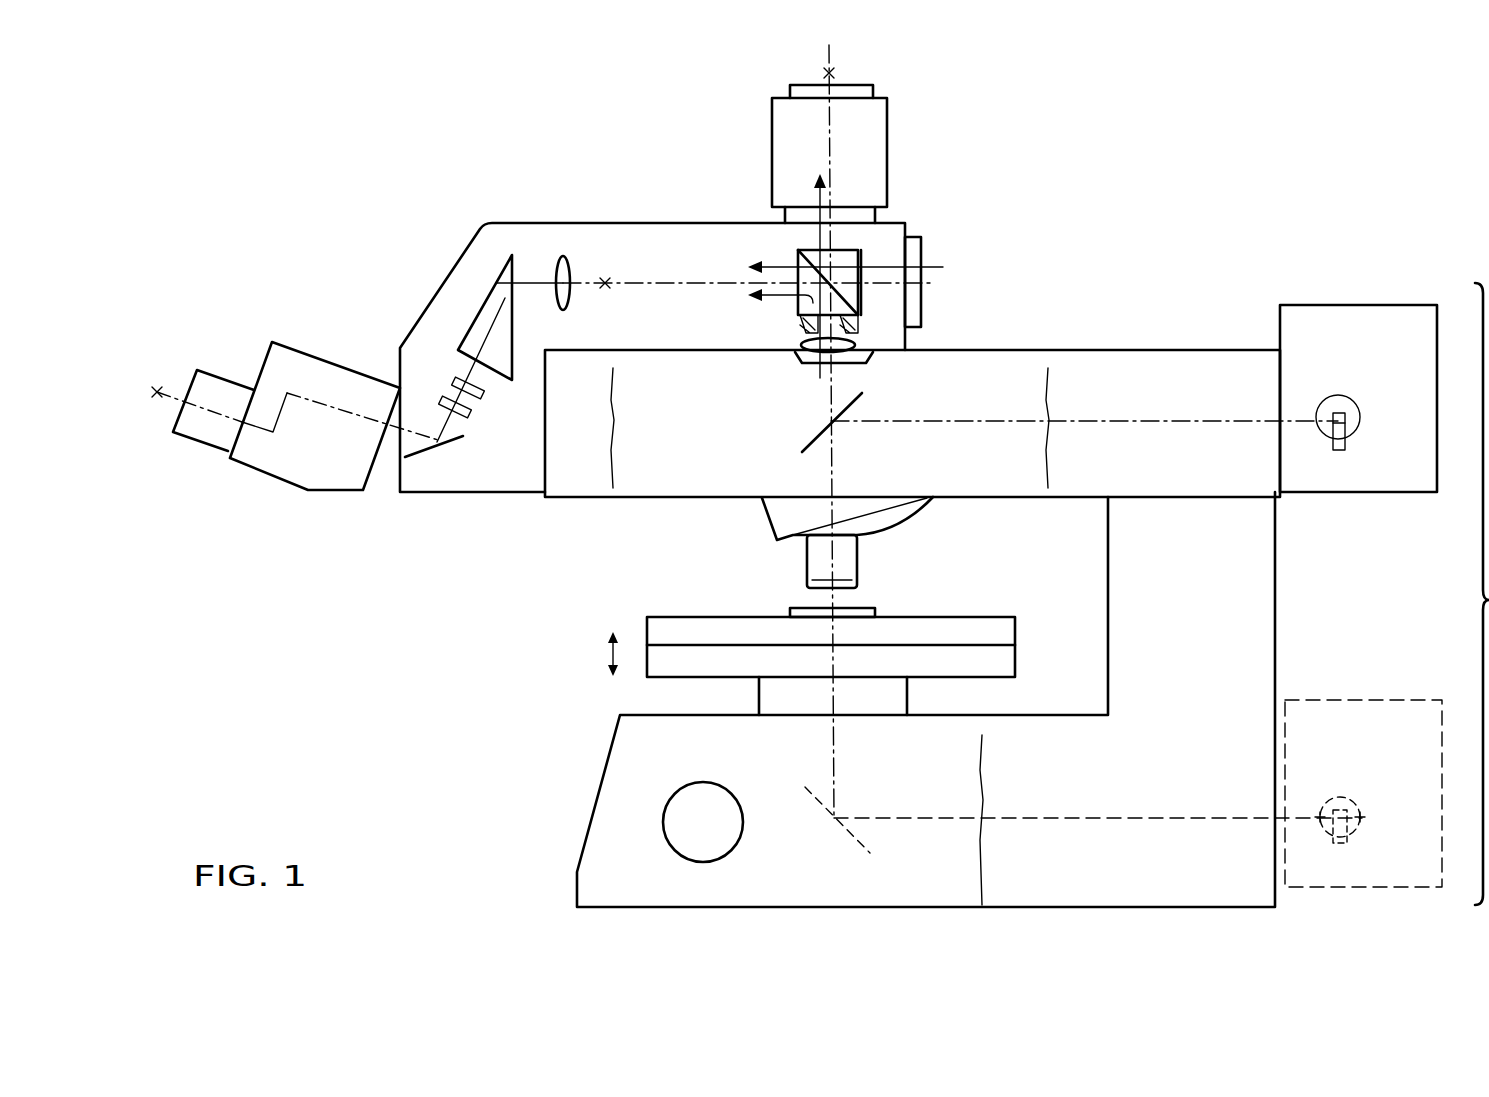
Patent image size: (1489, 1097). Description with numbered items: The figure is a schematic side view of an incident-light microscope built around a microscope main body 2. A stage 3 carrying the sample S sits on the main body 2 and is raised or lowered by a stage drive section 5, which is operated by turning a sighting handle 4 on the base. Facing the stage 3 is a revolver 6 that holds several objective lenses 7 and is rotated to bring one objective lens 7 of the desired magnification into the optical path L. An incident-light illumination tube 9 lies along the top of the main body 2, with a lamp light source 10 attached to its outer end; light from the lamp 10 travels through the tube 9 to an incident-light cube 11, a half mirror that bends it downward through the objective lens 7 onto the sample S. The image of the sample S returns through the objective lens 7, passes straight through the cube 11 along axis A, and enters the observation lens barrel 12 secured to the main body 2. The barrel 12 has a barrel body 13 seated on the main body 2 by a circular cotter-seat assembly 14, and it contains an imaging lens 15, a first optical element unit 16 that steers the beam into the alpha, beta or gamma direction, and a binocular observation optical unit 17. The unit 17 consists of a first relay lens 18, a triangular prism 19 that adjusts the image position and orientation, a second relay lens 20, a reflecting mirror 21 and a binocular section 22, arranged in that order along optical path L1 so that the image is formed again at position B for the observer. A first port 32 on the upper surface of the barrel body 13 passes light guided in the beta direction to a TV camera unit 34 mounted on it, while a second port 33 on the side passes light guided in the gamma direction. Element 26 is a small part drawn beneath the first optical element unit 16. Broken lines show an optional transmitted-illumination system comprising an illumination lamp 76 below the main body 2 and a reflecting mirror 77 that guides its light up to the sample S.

The microscope main body 2 is at (1262, 648).
The stage 3 is at (655, 622).
The sighting handle 4 is at (690, 840).
The stage drive section 5 is at (770, 692).
The revolver 6 is at (777, 512).
The objective lens 7 is at (848, 556).
The incident-light illumination tube 9 is at (1057, 370).
The lamp light source 10 is at (1360, 425).
The incident-light cube 11 is at (813, 438).
The observation lens barrel 12 is at (596, 203).
The barrel body 13 is at (650, 224).
The circular cotter-seat assembly 14 is at (873, 362).
The imaging lens 15 is at (853, 343).
The first optical element unit 16 is at (868, 246).
The binocular observation optical unit 17 is at (494, 258).
The first relay lens 18 is at (557, 262).
The triangular prism 19 is at (462, 320).
The second relay lens 20 is at (476, 418).
The reflecting mirror 21 is at (432, 470).
The binocular section 22 is at (295, 363).
The aperture 26 is at (853, 318).
The first port 32 is at (863, 214).
The second port 33 is at (912, 243).
The TV camera unit 34 is at (873, 115).
The illumination lamp 76 is at (1357, 797).
The reflecting mirror 77 is at (823, 818).
The optical axis A is at (836, 73).
The image position B is at (157, 385).
The optical path L is at (830, 557).
The optical path L1 is at (685, 283).
The sample S is at (873, 608).